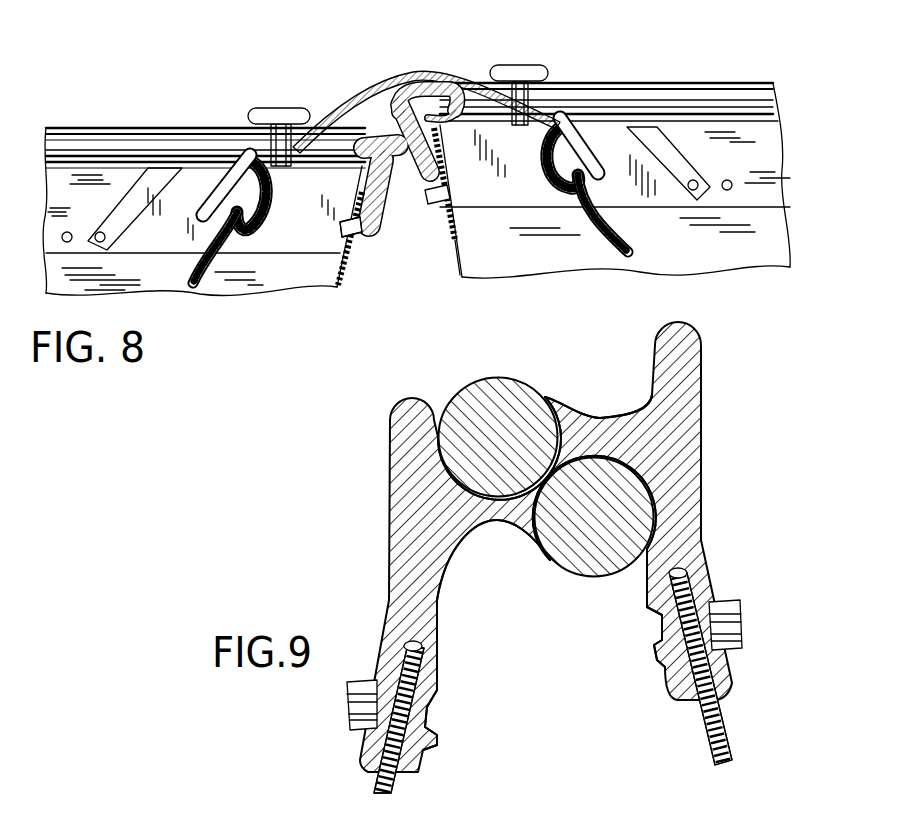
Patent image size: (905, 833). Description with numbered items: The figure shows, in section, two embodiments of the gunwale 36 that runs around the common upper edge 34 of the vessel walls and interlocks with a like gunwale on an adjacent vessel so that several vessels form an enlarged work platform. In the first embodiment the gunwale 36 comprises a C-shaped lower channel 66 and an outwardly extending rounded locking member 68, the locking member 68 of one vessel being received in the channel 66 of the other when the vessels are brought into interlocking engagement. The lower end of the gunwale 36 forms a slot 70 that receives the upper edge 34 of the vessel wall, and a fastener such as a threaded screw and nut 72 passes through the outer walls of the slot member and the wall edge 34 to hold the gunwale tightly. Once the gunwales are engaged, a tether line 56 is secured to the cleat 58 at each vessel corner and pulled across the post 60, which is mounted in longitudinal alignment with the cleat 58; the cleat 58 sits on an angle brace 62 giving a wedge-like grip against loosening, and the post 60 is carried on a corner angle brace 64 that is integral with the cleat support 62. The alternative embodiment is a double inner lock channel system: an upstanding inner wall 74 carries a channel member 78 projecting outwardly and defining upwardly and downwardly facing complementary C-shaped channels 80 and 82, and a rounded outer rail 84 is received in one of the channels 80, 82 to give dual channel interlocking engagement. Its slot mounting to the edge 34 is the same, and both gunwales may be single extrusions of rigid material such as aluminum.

In FIG. 8, the upper edge 34 is at (358, 243).
In FIG. 9, the upper edge 34 is at (393, 788).
In FIG. 8, the gunwale 36 is at (116, 150).
In FIG. 8, the tether line 56 is at (385, 70).
In FIG. 8, the cleat 58 is at (243, 152).
In FIG. 8, the post 60 is at (285, 108).
In FIG. 8, the angle brace 62 is at (297, 250).
In FIG. 8, the corner angle brace 64 is at (187, 160).
In FIG. 8, the C-shaped lower channel 66 is at (393, 197).
In FIG. 8, the rounded locking member 68 is at (446, 163).
In FIG. 8, the slot 70 is at (355, 260).
In FIG. 9, the slot 70 is at (405, 643).
In FIG. 9, the threaded screw and nut 72 is at (432, 722).
In FIG. 9, the upstanding inner wall 74 is at (408, 467).
In FIG. 8, the channel member 78 is at (340, 230).
In FIG. 9, the channel member 78 is at (556, 392).
In FIG. 9, the C-shaped channel 80 is at (600, 418).
In FIG. 9, the C-shaped channel 82 is at (612, 460).
In FIG. 9, the rounded outer rail 84 is at (478, 392).